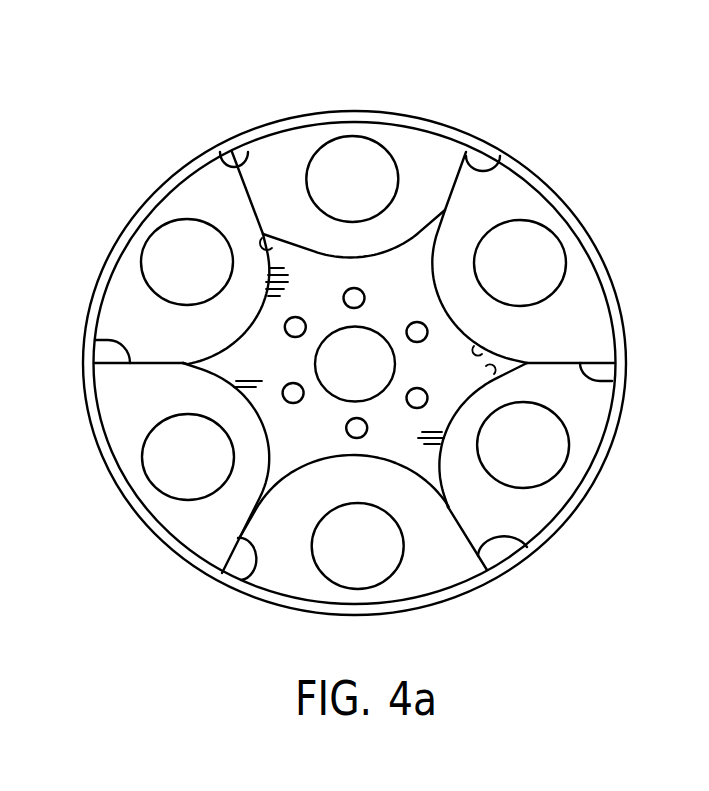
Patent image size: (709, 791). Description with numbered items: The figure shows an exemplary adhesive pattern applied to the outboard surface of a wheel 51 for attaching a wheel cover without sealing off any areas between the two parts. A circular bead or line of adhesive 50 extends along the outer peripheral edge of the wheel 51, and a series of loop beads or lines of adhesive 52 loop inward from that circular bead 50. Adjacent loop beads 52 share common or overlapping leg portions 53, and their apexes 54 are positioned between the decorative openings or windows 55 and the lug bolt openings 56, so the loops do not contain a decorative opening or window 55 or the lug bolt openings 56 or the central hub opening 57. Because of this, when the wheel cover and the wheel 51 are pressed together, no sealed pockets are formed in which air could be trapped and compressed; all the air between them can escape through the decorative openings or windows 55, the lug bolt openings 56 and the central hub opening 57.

The circular bead or line of adhesive 50 is at (541, 179).
The wheel 51 is at (475, 128).
The loop beads or lines of adhesive 52 is at (260, 235).
The common or overlapping leg portions 53 is at (235, 160).
The apexes 54 is at (340, 258).
The decorative openings or windows 55 is at (371, 173).
The lug bolt openings 56 is at (364, 299).
The central hub opening 57 is at (342, 378).